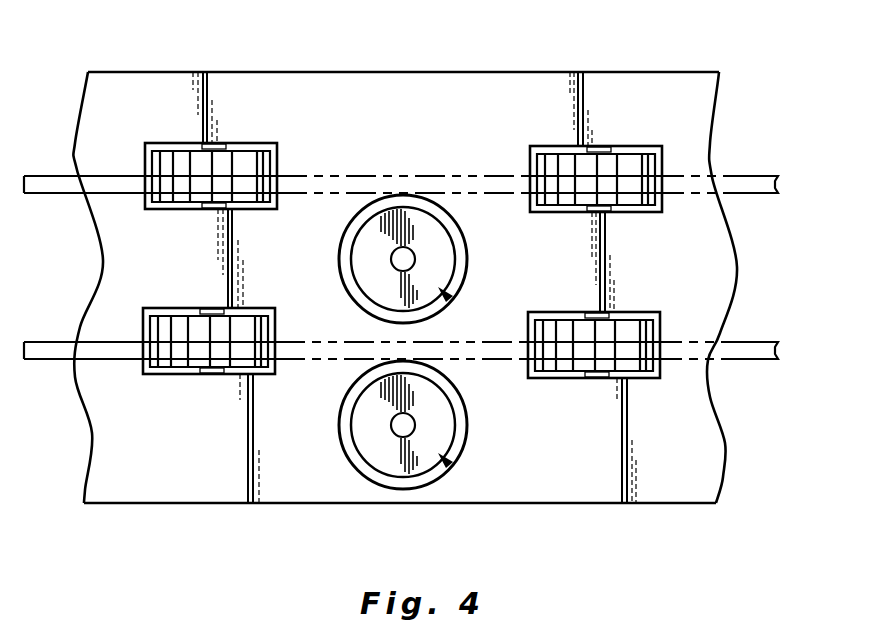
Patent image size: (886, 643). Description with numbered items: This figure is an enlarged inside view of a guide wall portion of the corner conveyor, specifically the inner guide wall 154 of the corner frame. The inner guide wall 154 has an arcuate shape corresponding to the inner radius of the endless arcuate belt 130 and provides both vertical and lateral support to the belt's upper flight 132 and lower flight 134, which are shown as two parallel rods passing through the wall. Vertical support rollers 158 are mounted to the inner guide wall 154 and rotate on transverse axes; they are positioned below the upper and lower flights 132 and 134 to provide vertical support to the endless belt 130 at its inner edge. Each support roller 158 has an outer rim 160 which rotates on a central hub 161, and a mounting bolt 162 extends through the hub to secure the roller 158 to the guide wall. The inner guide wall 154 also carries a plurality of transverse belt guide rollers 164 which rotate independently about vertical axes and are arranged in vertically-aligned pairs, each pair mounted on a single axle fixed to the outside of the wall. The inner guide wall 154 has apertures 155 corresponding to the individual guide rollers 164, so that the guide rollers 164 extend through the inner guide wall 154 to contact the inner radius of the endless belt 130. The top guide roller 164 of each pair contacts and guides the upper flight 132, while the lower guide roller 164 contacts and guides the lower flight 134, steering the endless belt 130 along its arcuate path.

The endless arcuate belt 130 is at (450, 229).
The upper flight 132 is at (731, 176).
The lower flight 134 is at (743, 347).
The inner guide wall 154 is at (382, 83).
The apertures 155 is at (628, 316).
The vertical support roller 158 is at (447, 462).
The outer rim 160 is at (358, 388).
The central hub 161 is at (360, 418).
The mounting bolt 162 is at (410, 419).
The transverse belt guide roller 164 is at (580, 320).